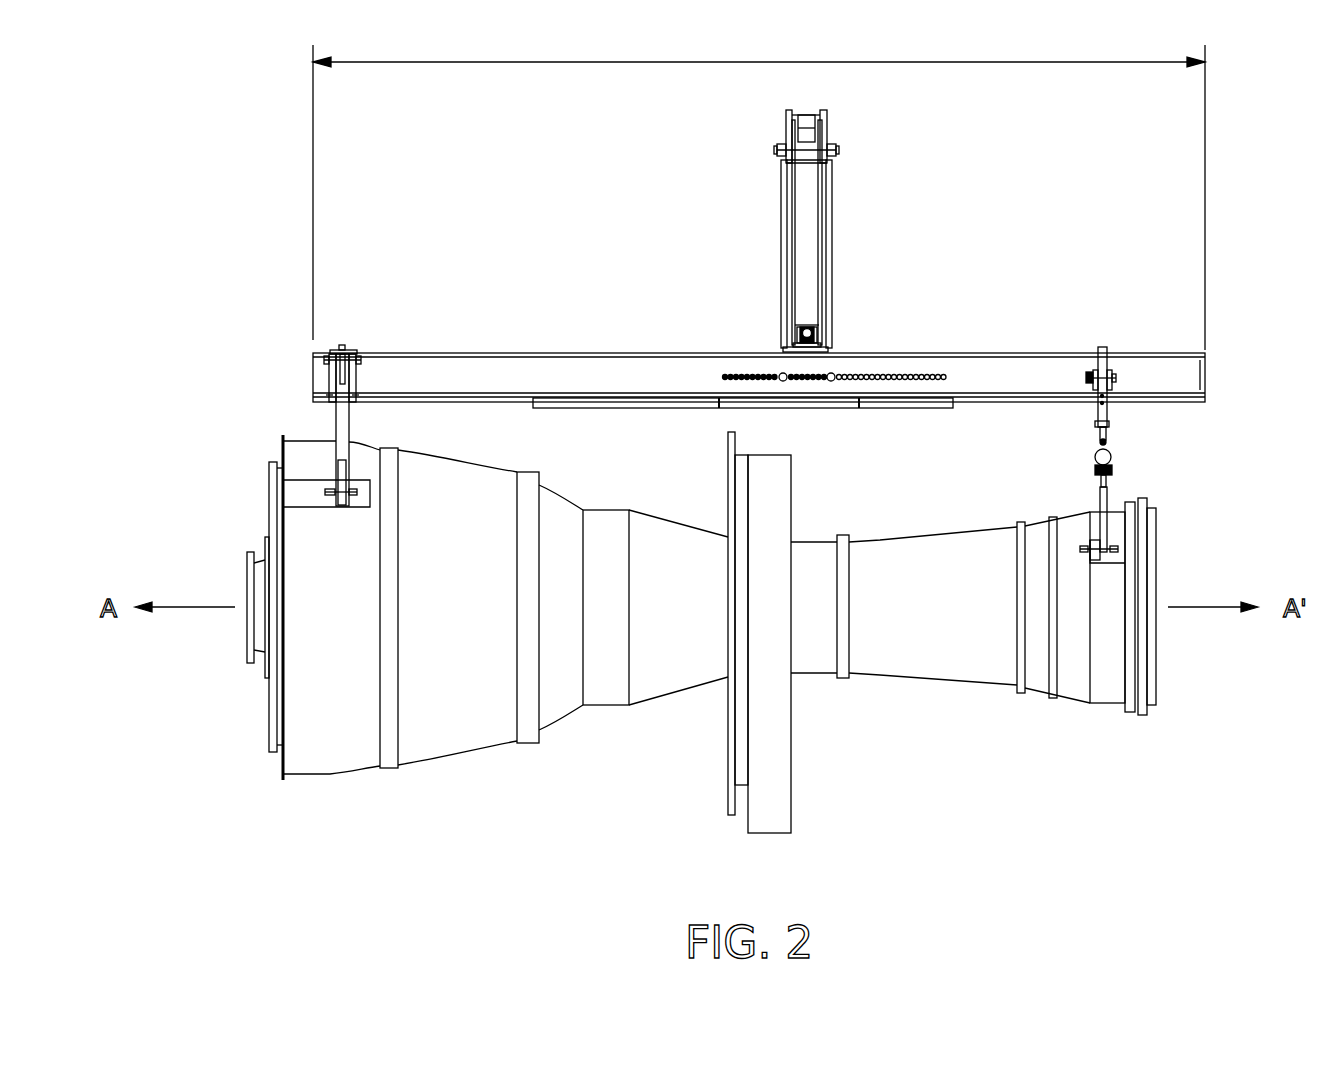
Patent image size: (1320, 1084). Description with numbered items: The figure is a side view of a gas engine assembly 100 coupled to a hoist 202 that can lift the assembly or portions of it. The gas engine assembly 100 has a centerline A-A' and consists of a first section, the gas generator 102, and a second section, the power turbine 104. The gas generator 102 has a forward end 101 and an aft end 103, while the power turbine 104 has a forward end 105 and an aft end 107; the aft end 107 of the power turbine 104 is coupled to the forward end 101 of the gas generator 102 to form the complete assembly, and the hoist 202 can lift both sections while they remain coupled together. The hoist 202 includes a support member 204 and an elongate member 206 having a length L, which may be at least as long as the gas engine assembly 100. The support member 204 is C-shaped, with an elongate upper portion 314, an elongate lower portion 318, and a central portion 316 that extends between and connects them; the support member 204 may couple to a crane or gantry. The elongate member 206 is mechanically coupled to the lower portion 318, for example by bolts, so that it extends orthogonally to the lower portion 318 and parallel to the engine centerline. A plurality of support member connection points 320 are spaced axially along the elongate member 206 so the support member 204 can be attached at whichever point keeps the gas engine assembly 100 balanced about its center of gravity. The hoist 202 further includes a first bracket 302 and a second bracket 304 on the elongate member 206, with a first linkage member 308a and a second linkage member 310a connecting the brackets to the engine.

The gas engine assembly 100 is at (711, 677).
The forward end 101 is at (558, 722).
The gas generator 102 is at (879, 677).
The aft end 103 is at (1183, 617).
The power turbine 104 is at (406, 681).
The forward end 105 is at (283, 775).
The aft end 107 is at (283, 802).
The hoist 202 is at (806, 206).
The support member 204 is at (786, 108).
The elongate member 206 is at (1022, 352).
The first bracket 302 is at (336, 347).
The second bracket 304 is at (1101, 352).
The first linkage member 308a is at (335, 432).
The second linkage member 310a is at (1110, 413).
The upper portion 314 is at (786, 130).
The central portion 316 is at (781, 240).
The lower portion 318 is at (782, 342).
The support member connection points 320 is at (880, 372).
The length L is at (687, 62).